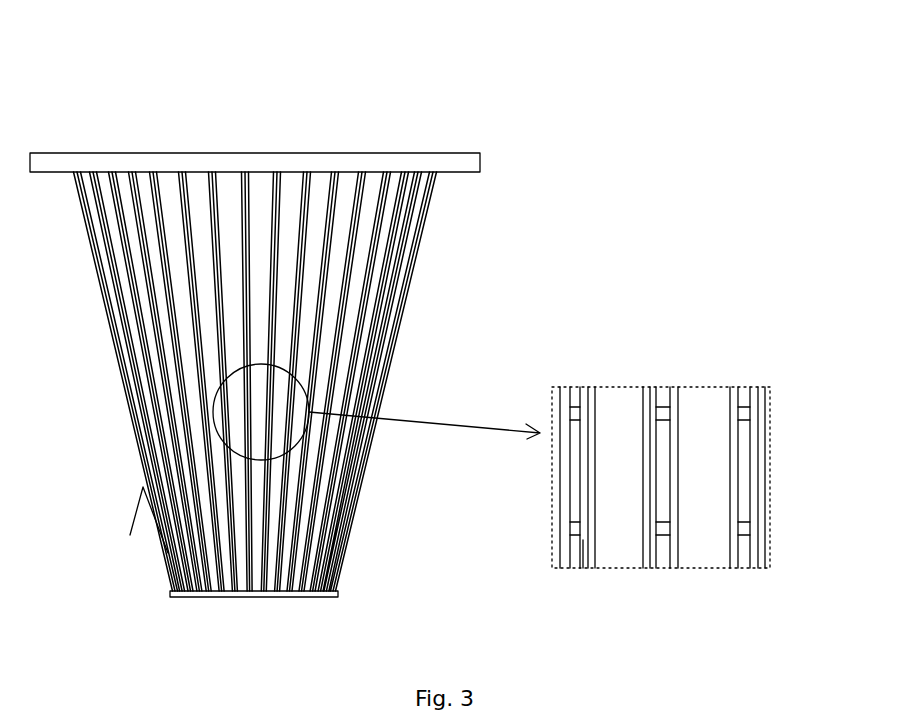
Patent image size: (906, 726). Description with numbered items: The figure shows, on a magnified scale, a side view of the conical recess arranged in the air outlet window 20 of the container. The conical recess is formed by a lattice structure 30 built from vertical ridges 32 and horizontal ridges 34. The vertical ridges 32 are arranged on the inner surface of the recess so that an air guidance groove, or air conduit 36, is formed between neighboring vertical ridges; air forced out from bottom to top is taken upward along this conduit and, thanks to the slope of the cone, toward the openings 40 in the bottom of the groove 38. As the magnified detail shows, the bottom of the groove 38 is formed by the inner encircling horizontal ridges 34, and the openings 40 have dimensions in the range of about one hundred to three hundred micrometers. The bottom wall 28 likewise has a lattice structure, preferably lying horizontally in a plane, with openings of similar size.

The air outlet window 20 is at (440, 108).
The bottom wall 28 is at (277, 590).
The lattice structure 30 is at (438, 283).
The vertical ridges 32 is at (167, 183).
The horizontal ridges 34 is at (250, 177).
The air conduit 36 is at (337, 173).
The groove 38 is at (583, 568).
The openings 40 is at (662, 445).